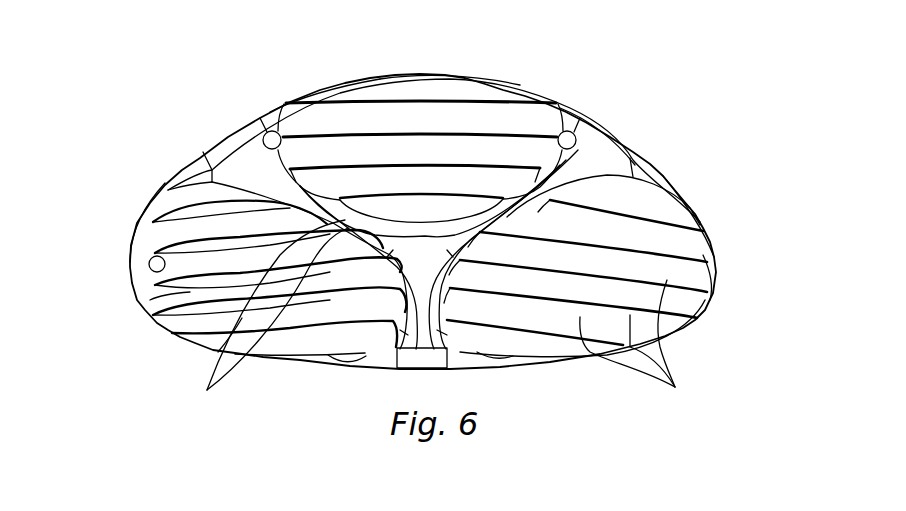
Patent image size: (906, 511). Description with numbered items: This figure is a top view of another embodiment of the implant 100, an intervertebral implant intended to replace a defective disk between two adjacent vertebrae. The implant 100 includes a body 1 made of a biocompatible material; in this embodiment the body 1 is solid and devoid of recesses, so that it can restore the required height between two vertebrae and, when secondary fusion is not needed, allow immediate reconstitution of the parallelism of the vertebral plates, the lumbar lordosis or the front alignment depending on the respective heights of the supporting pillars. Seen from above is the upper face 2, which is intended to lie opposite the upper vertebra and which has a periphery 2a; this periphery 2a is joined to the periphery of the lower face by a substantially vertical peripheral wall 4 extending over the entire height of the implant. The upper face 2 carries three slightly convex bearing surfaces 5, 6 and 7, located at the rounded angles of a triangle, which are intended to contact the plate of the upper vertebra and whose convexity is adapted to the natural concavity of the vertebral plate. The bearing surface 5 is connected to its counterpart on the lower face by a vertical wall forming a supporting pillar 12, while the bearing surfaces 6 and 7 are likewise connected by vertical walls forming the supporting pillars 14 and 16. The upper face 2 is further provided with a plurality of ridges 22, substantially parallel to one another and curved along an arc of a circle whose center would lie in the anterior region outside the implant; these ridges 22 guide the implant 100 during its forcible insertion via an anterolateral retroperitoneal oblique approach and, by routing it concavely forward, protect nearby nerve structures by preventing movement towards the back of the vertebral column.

The implant 100 is at (722, 133).
The body 1 is at (638, 137).
The upper face 2 is at (251, 166).
The periphery 2a is at (322, 85).
The peripheral wall 4 is at (528, 377).
The bearing surface 5 is at (513, 122).
The bearing surface 6 is at (167, 295).
The bearing surface 7 is at (685, 276).
The supporting pillar 12 is at (440, 73).
The supporting pillar 14 is at (128, 238).
The supporting pillar 16 is at (700, 213).
The ridges 22 is at (498, 103).